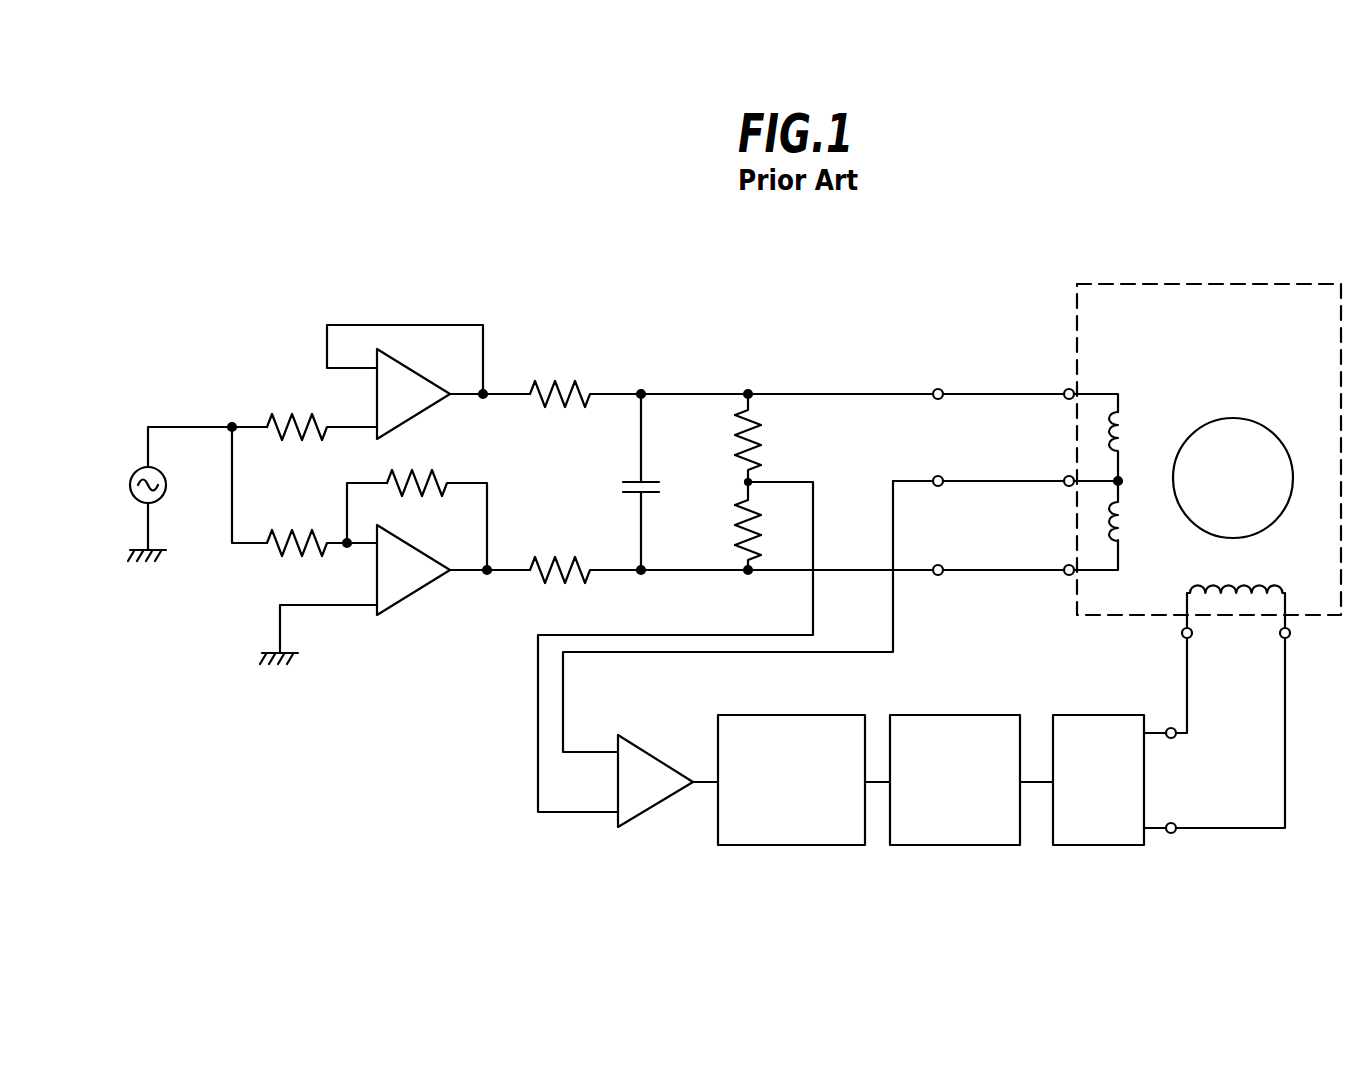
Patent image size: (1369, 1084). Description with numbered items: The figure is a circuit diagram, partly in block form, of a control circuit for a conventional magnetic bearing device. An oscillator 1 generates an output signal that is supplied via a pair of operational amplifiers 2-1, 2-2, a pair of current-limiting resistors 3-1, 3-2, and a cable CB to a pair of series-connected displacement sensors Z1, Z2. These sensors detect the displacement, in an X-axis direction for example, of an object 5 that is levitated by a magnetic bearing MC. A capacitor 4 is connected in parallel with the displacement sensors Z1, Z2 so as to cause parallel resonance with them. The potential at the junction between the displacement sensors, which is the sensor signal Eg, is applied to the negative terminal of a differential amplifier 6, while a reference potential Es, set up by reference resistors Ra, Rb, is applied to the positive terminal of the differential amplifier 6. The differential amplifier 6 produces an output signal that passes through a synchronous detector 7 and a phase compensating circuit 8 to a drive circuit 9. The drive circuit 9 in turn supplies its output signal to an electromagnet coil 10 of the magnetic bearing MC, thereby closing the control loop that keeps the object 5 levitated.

The oscillator 1 is at (166, 494).
The operational amplifier 2-1 is at (410, 367).
The operational amplifier 2-2 is at (422, 593).
The current-limiting resistor 3-1 is at (557, 385).
The current-limiting resistor 3-2 is at (555, 560).
The capacitor 4 is at (647, 482).
The object 5 is at (1237, 418).
The differential amplifier 6 is at (667, 802).
The synchronous detector 7 is at (797, 847).
The phase compensating circuit 8 is at (957, 847).
The drive circuit 9 is at (1105, 847).
The electromagnet coil 10 is at (1285, 597).
The reference resistor Ra is at (774, 438).
The reference resistor Rb is at (773, 526).
The reference potential Es is at (747, 482).
The sensor signal Eg is at (1116, 481).
The displacement sensor Z1 is at (1142, 446).
The displacement sensor Z2 is at (1142, 511).
The cable CB is at (978, 390).
The magnetic bearing MC is at (1190, 282).